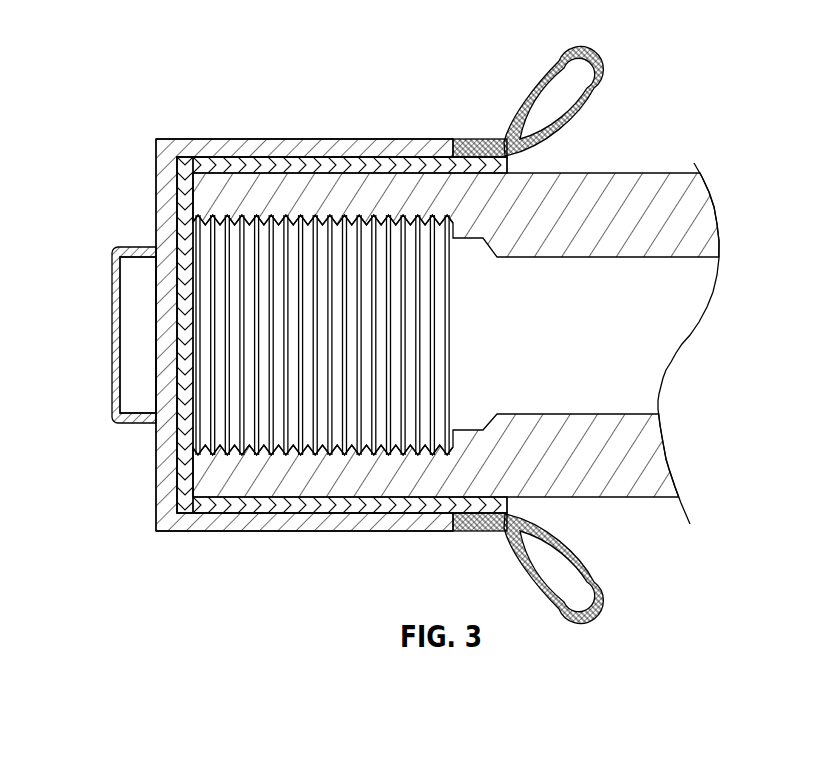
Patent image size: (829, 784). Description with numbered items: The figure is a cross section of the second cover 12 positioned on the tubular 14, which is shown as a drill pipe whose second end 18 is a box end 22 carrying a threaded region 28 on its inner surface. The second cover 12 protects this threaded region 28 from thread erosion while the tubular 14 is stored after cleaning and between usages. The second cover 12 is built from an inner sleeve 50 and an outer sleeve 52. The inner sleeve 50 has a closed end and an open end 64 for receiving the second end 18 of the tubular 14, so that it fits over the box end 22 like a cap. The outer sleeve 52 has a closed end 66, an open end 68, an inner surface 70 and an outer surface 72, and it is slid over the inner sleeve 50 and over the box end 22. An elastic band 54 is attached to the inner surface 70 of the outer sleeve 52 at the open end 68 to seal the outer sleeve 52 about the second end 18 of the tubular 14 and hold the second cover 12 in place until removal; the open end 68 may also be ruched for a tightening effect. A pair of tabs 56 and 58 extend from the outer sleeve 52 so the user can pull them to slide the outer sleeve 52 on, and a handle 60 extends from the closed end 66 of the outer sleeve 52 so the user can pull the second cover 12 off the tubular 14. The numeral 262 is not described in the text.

The second cover 12 is at (422, 140).
The tubular 14 is at (647, 173).
The second end 18 is at (192, 447).
The box end 22 is at (195, 250).
The threaded region 28 is at (255, 448).
The inner sleeve 50 is at (382, 140).
The outer sleeve 52 is at (170, 138).
The elastic band 54 is at (509, 516).
The tab 56 is at (571, 59).
The tab 58 is at (572, 612).
The handle 60 is at (108, 399).
The open end 64 is at (510, 171).
The closed end 66 is at (152, 358).
The open end 68 is at (509, 533).
The inner surface 70 is at (340, 507).
The outer surface 72 is at (293, 532).
The liner end wall 262 is at (183, 192).